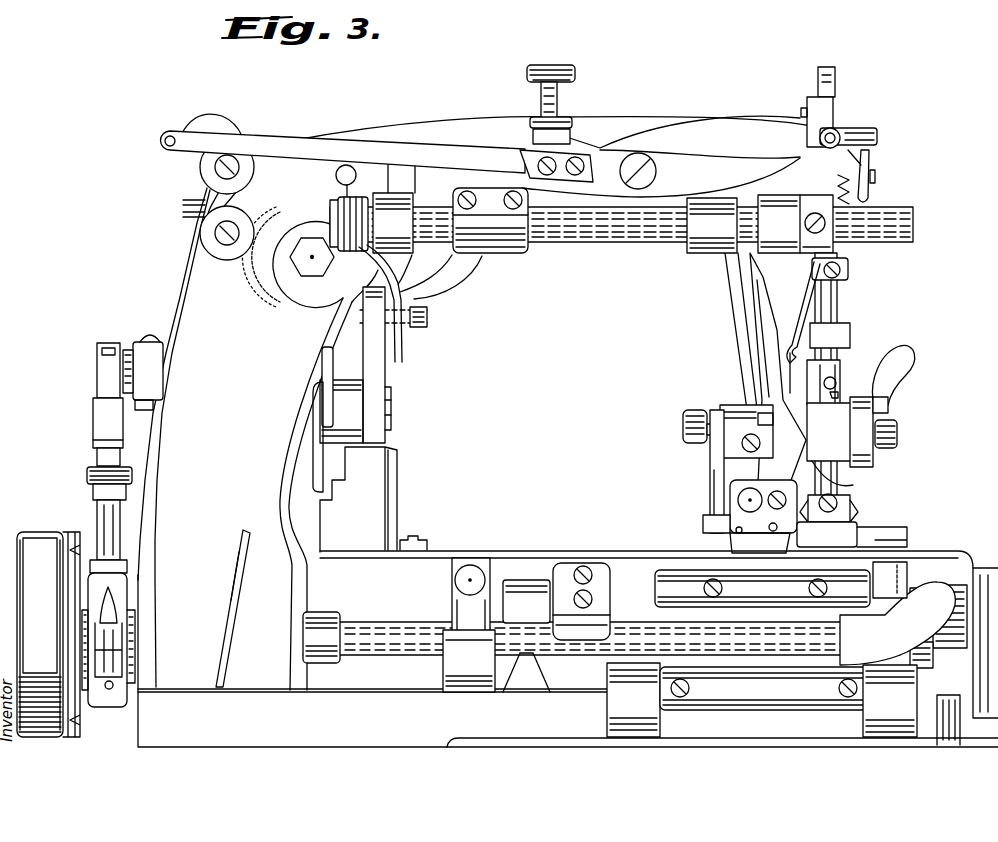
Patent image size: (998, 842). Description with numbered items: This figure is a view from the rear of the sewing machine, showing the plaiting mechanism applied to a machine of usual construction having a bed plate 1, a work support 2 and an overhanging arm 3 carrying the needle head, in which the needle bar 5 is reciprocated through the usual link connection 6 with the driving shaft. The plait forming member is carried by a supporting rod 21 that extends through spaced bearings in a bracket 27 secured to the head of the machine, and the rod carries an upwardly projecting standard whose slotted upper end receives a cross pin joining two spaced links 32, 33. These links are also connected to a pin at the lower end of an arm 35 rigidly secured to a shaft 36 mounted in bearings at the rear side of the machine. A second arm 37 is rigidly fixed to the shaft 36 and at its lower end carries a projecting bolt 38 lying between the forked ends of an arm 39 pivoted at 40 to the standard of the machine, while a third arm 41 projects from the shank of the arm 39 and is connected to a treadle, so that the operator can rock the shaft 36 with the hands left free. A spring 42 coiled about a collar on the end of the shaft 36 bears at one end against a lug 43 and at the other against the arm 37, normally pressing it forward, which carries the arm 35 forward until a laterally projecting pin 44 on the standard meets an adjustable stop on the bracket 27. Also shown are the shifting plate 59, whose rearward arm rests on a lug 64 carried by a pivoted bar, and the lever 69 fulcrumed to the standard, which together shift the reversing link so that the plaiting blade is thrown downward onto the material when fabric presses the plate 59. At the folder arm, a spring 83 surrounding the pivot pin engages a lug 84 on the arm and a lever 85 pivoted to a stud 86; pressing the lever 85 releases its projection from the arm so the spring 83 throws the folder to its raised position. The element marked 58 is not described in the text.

The bed plate 1 is at (568, 657).
The work support 2 is at (510, 559).
The overhanging arm 3 is at (269, 402).
The needle bar 5 is at (838, 93).
The link connection 6 is at (96, 517).
The supporting rod 21 is at (740, 499).
The bracket 27 is at (772, 382).
The link 32 is at (726, 480).
The link 33 is at (735, 430).
The arm 35 is at (735, 336).
The shaft 36 is at (634, 230).
The second arm 37 is at (456, 278).
The projecting bolt 38 is at (420, 328).
The arm 39 is at (375, 373).
The pivot 40 is at (393, 404).
The third arm 41 is at (322, 368).
The spring 42 is at (396, 272).
The lug 43 is at (336, 176).
The laterally projecting pin 44 is at (717, 448).
The throat plate 58 is at (780, 533).
The shifting plate 59 is at (905, 533).
The lug 64 is at (782, 531).
The lever 69 is at (760, 544).
The spring 83 is at (885, 455).
The lug 84 is at (898, 435).
The lever 85 is at (900, 362).
The stud 86 is at (889, 405).